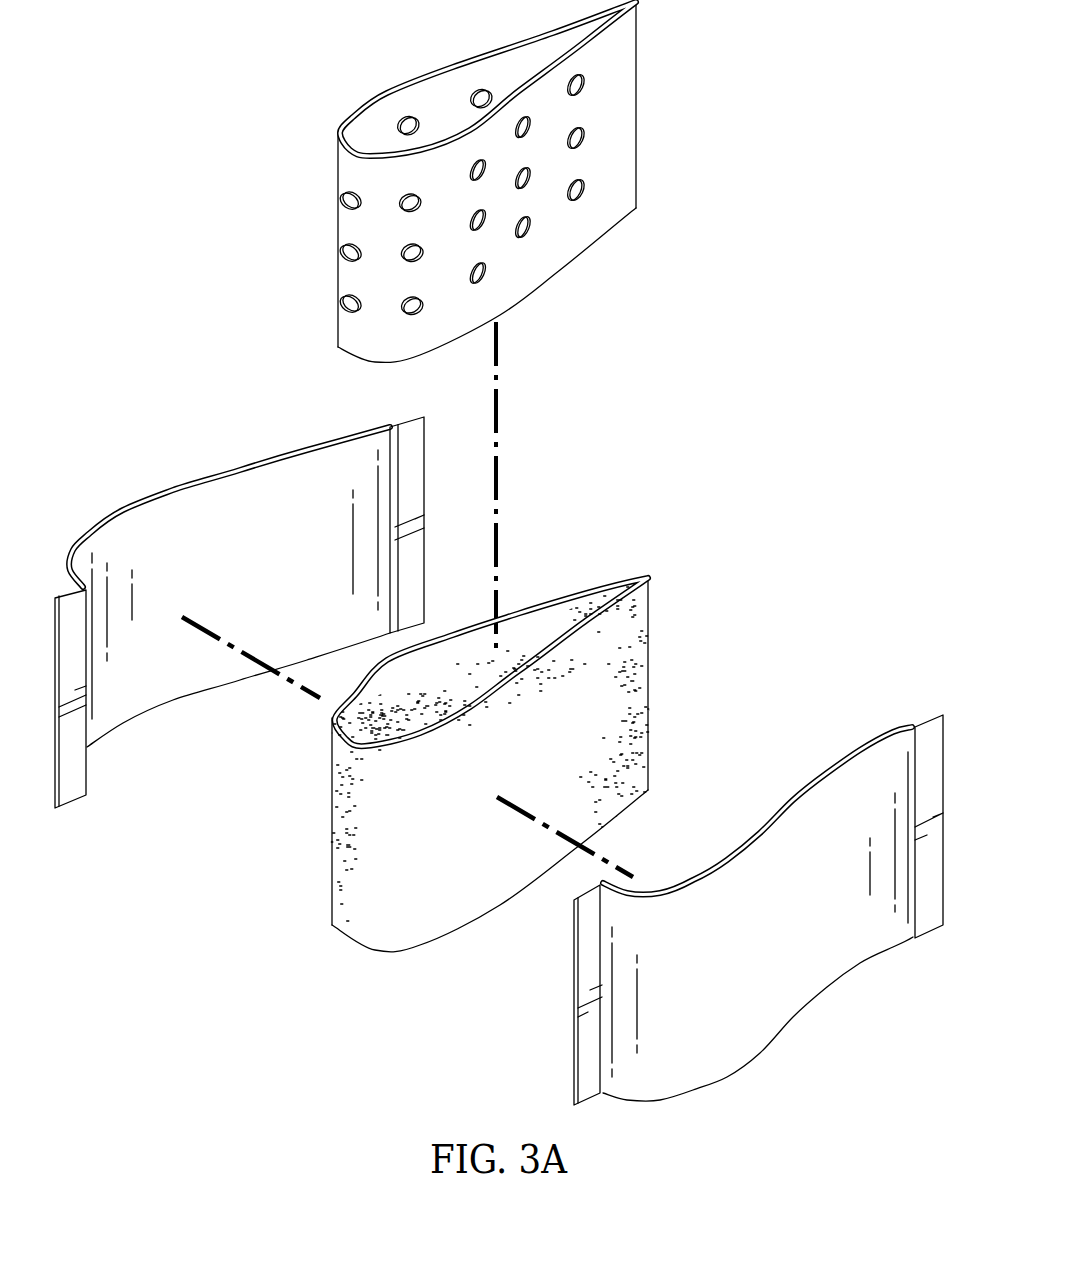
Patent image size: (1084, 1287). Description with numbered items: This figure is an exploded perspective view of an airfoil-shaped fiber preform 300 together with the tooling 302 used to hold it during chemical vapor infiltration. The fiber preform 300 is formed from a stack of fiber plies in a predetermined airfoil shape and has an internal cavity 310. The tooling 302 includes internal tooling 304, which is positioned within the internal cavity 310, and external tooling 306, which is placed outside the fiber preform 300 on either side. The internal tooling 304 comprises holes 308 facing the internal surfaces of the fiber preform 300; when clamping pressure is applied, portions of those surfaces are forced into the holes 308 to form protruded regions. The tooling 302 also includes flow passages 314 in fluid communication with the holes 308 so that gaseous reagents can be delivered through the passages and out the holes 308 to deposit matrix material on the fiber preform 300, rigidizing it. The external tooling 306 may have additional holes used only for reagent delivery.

The fiber preform 300 is at (494, 721).
The tooling 302 is at (499, 553).
The internal tooling 304 is at (546, 182).
The external tooling 306 is at (200, 480).
The holes 308 is at (585, 143).
The internal cavity 310 is at (469, 652).
The flow passages 314 is at (435, 89).